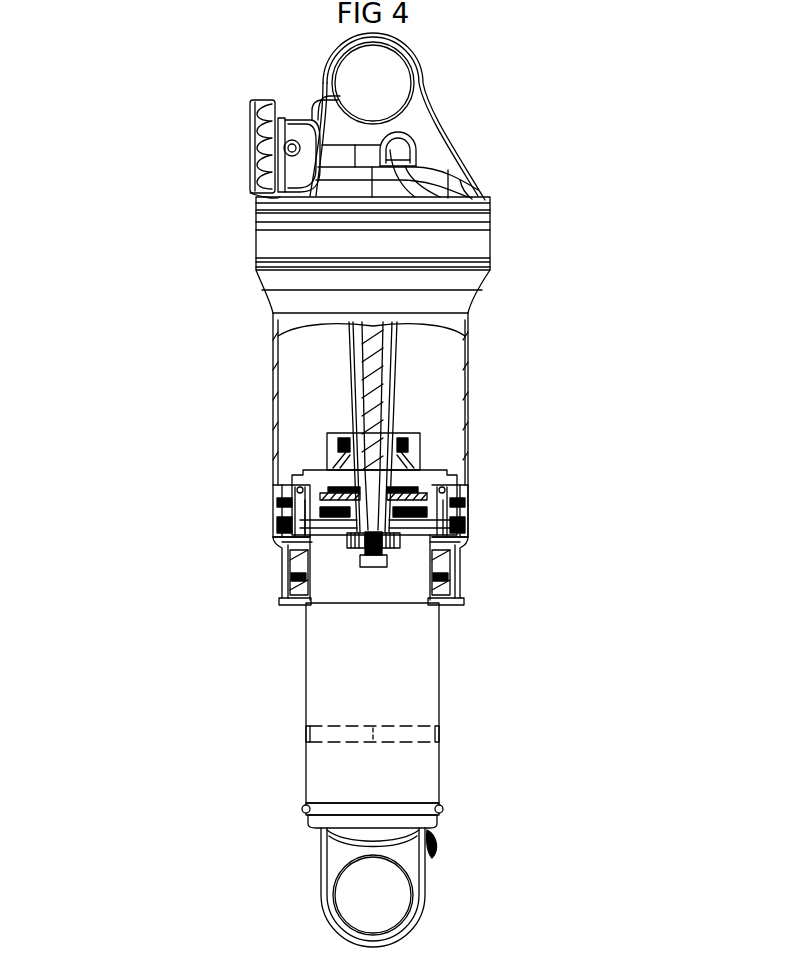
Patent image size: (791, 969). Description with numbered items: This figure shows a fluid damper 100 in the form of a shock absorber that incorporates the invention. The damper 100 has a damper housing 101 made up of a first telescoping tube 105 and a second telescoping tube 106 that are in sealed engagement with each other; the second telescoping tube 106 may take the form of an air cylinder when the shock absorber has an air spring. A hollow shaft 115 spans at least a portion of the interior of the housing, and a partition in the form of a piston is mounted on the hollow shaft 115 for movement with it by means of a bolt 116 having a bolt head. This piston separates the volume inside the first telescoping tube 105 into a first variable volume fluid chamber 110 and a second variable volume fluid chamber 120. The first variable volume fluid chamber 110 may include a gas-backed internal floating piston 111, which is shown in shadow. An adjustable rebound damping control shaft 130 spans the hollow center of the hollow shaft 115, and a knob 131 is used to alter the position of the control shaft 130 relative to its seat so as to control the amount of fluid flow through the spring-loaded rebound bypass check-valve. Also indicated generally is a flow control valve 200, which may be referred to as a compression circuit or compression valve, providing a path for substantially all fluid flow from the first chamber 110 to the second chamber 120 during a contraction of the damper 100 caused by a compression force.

The damper 100 is at (80, 268).
The damper housing 101 is at (523, 404).
The first telescoping tube 105 is at (306, 770).
The second telescoping tube 106 is at (462, 304).
The first variable volume fluid chamber 110 is at (367, 592).
The internal floating piston 111 is at (373, 737).
The hollow shaft 115 is at (352, 372).
The bolt 116 is at (387, 540).
The second variable volume fluid chamber 120 is at (420, 490).
The adjustable rebound damping control shaft 130 is at (390, 373).
The knob 131 is at (263, 194).
The flow control valve 200 is at (250, 518).